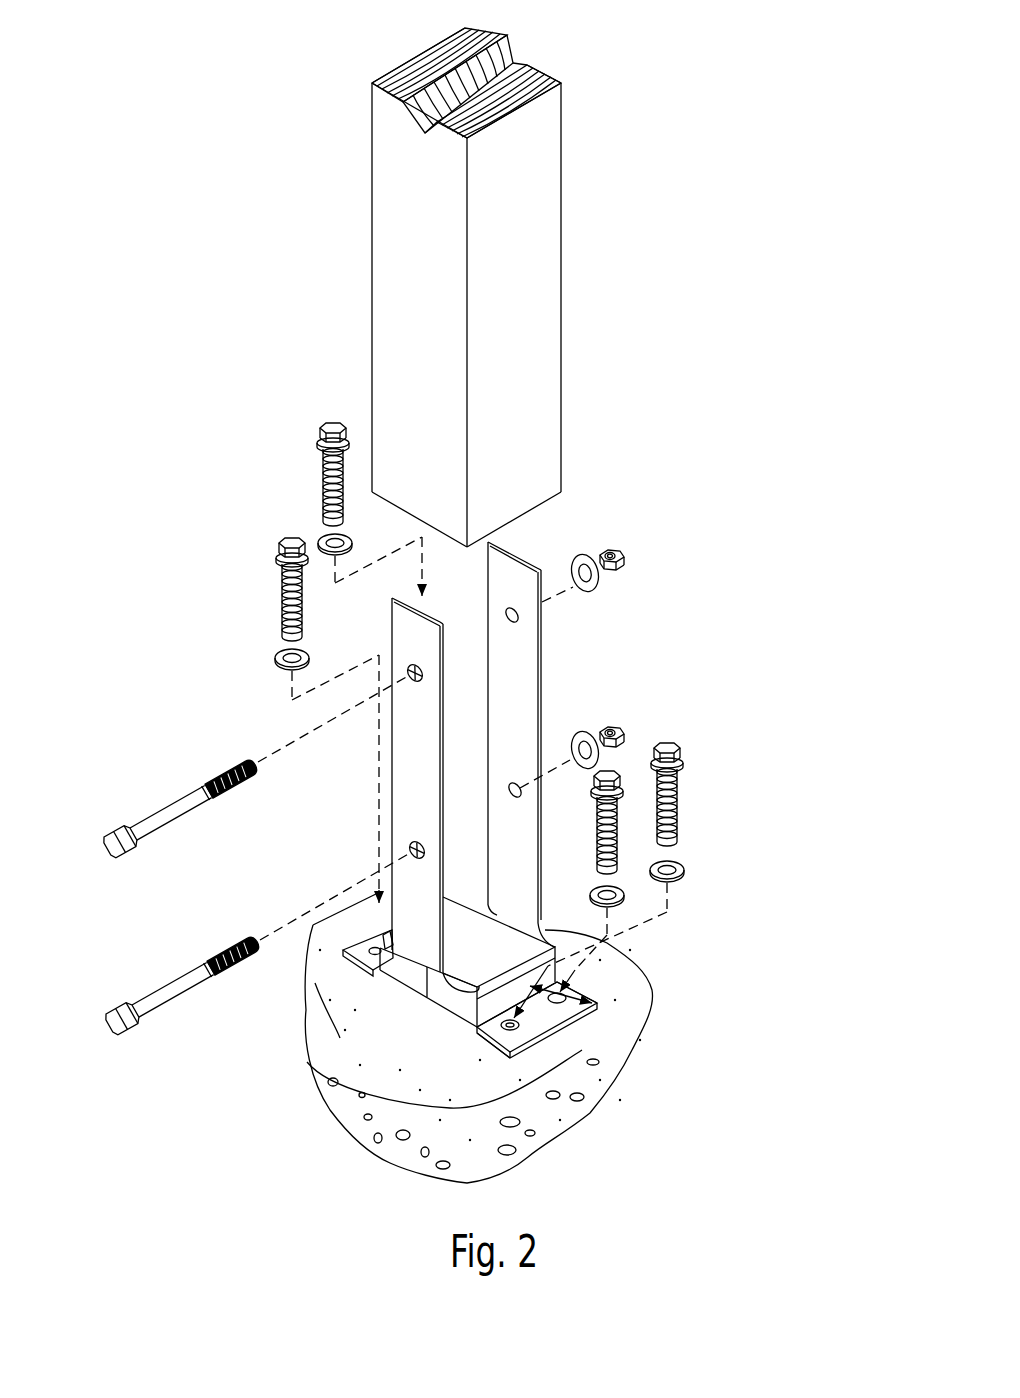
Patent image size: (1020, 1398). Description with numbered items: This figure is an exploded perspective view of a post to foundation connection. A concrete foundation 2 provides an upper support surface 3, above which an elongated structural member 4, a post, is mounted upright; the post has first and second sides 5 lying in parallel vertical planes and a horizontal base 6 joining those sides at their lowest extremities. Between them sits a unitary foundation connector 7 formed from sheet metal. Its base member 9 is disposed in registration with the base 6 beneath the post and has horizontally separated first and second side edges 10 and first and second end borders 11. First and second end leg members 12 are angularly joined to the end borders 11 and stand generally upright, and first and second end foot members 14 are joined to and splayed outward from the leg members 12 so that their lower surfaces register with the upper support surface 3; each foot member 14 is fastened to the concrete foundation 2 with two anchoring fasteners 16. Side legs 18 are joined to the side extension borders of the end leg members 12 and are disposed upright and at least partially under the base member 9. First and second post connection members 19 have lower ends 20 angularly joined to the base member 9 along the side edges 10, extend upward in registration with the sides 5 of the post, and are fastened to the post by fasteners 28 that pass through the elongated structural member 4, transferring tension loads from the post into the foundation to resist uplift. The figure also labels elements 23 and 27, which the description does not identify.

The concrete foundation 2 is at (328, 1114).
The upper support surface 3 is at (417, 1082).
The elongated structural member 4 is at (572, 136).
The first and second sides 5 is at (382, 120).
The base 6 is at (556, 500).
The unitary foundation connector 7 is at (545, 1043).
The base member 9 is at (575, 935).
The first and second side edges 10 is at (480, 903).
The first and second end borders 11 is at (512, 1032).
The first and second end leg members 12 is at (537, 1012).
The first and second end foot members 14 is at (345, 951).
The anchoring fasteners 16 is at (325, 490).
The side legs 18 is at (590, 1110).
The first and second post connection members 19 is at (546, 676).
The first and second lower ends 20 is at (505, 903).
The spacer block 23 is at (514, 936).
The bolt holes 27 is at (518, 614).
The fasteners 28 is at (112, 850).